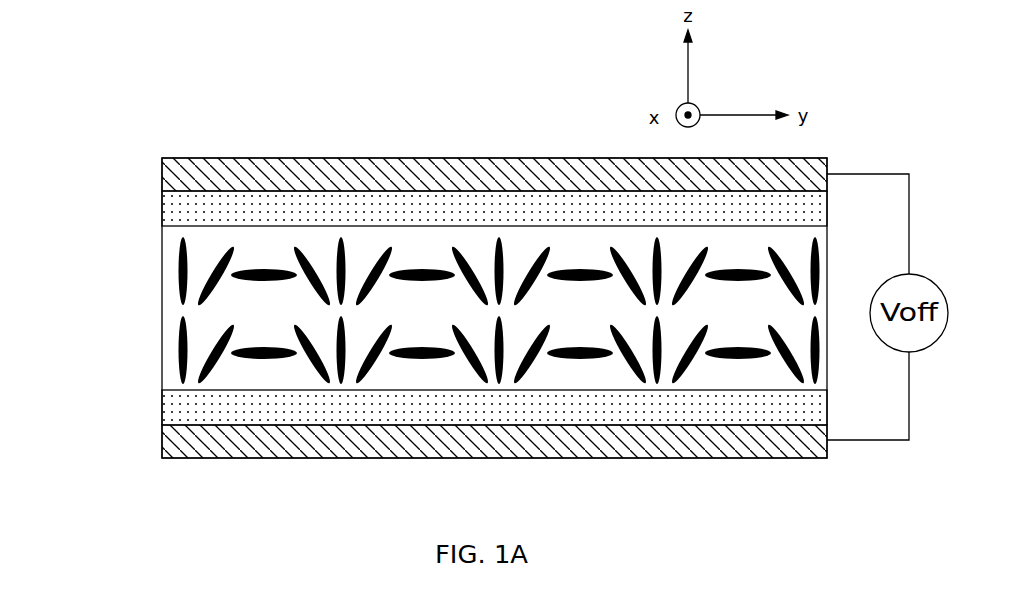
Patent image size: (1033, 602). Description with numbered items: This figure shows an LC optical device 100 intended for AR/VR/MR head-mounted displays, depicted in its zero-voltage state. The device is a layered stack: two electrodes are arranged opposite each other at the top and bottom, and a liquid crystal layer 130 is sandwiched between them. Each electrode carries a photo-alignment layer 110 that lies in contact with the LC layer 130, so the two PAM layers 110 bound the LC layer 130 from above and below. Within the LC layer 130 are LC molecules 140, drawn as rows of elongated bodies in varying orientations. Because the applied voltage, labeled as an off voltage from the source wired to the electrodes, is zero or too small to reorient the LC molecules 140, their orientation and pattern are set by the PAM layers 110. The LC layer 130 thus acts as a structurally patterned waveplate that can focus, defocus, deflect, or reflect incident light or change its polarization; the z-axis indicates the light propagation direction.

The LC optical device 100 is at (90, 86).
The photo-alignment (PAM) layer 110 is at (203, 216).
The LC molecules 140 is at (178, 267).
The liquid crystal (LC) layer 130 is at (172, 334).